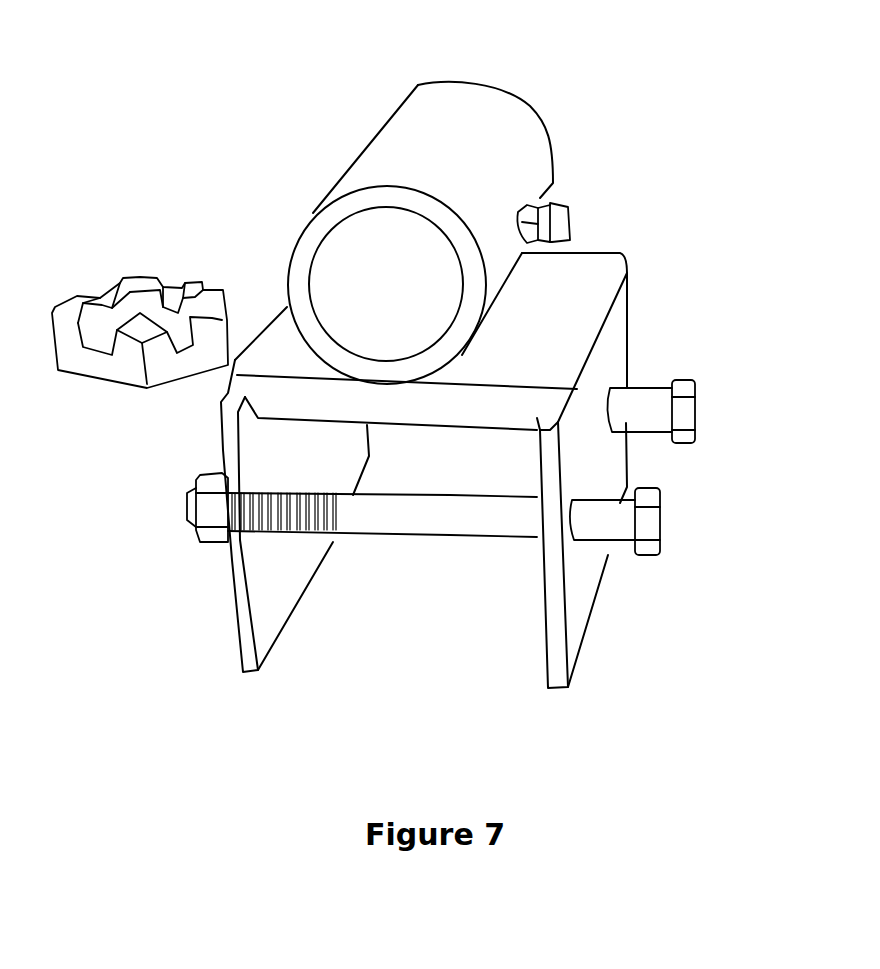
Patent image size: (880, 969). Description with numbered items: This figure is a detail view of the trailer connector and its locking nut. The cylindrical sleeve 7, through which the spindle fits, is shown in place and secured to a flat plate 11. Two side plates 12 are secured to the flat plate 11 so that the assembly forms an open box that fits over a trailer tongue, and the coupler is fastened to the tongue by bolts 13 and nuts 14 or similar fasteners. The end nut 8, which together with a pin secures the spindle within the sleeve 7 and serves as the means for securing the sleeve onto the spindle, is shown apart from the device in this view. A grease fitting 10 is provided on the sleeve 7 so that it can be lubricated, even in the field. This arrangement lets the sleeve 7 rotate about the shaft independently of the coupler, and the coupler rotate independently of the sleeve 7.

The sleeve 7 is at (364, 160).
The nut 8 is at (92, 297).
The grease fitting 10 is at (557, 222).
The flat plate 11 is at (549, 292).
The side plates 12 is at (268, 582).
The bolts 13 is at (648, 515).
The nuts 14 is at (208, 542).